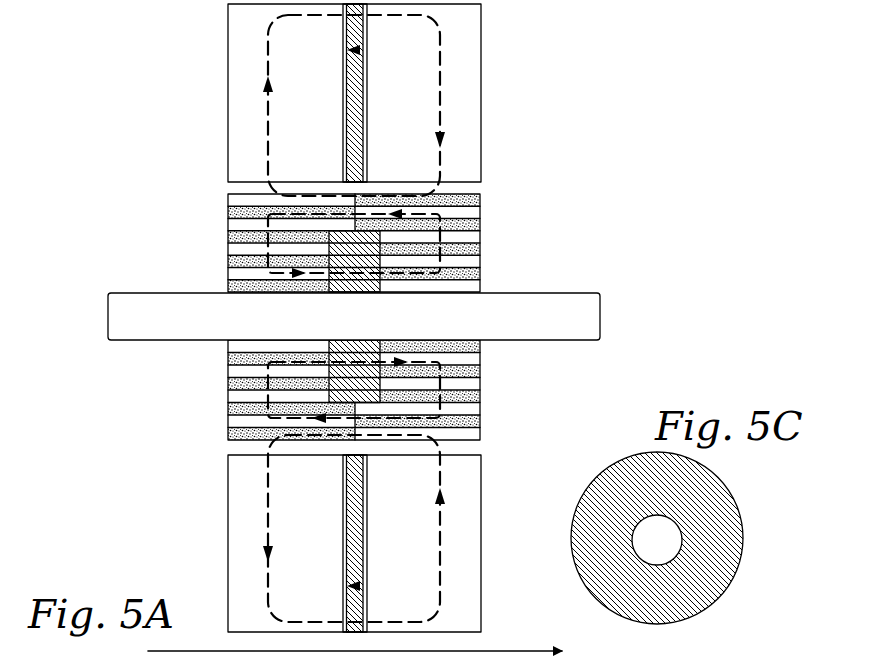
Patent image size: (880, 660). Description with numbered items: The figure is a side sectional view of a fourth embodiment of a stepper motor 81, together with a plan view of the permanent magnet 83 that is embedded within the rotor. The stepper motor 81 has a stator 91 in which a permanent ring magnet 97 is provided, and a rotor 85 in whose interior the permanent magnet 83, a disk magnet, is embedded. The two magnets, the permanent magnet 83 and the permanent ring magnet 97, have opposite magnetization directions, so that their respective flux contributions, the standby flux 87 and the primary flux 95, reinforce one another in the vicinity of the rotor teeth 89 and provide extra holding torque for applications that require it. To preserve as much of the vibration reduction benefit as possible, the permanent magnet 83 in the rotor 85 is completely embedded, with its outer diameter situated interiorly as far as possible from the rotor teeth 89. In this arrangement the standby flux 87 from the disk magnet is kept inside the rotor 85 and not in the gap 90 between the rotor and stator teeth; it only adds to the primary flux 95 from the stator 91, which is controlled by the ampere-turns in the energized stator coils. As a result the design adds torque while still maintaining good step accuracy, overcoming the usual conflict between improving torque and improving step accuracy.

In FIG. 5A, the stepper motor 81 is at (128, 184).
In FIG. 5A, the permanent magnet 83 is at (352, 294).
In FIG. 5C, the permanent magnet 83 is at (590, 492).
In FIG. 5A, the rotor 85 is at (228, 230).
In FIG. 5A, the standby flux 87 is at (481, 240).
In FIG. 5A, the rotor teeth 89 is at (482, 198).
In FIG. 5A, the gap 90 is at (232, 448).
In FIG. 5A, the stator 91 is at (229, 553).
In FIG. 5A, the primary flux 95 is at (440, 572).
In FIG. 5A, the permanent ring magnet 97 is at (365, 30).